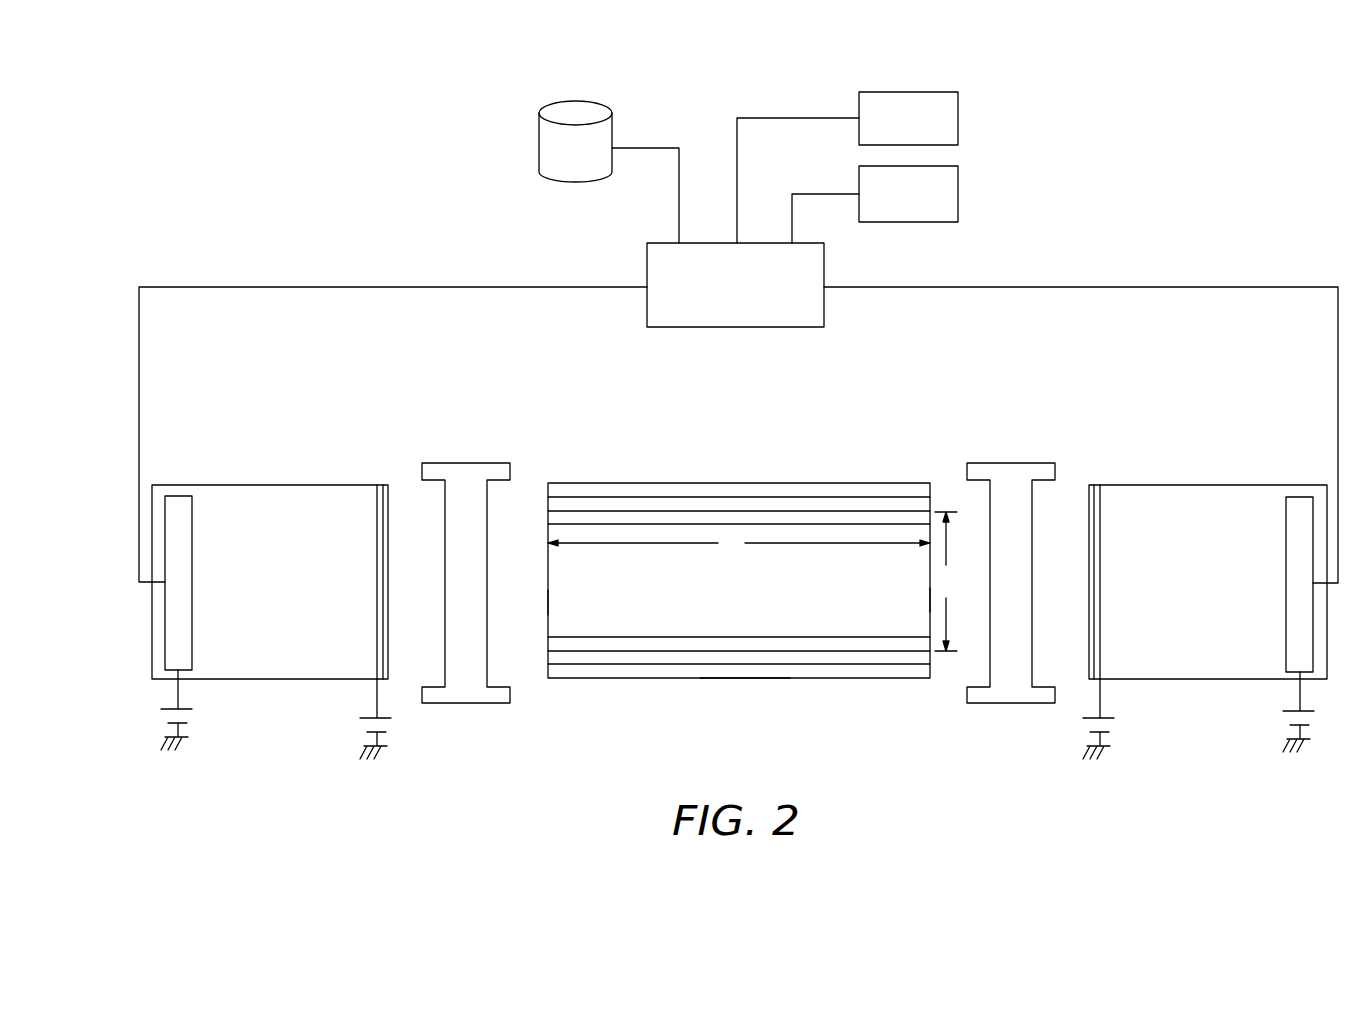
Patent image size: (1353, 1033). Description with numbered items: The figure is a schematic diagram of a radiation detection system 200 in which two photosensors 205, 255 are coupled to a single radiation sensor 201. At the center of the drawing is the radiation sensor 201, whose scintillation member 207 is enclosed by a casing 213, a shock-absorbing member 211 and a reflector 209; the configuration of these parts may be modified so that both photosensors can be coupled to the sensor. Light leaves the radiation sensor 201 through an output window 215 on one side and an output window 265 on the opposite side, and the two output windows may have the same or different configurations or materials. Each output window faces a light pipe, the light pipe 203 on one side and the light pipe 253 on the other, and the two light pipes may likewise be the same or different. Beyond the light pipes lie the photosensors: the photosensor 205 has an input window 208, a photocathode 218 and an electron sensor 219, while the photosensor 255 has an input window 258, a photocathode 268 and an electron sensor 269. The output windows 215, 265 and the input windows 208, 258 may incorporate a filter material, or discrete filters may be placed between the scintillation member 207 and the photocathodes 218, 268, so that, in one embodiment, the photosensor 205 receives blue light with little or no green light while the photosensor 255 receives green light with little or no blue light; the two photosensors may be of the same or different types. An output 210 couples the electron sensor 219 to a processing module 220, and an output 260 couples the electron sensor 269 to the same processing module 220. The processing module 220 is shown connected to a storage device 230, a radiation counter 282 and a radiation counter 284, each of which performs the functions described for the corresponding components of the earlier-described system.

The radiation detection system 200 is at (1154, 120).
The radiation sensor 201 is at (742, 685).
The light pipe 203 is at (458, 703).
The photosensor 205 is at (297, 594).
The scintillation member 207 is at (752, 594).
The input window 208 is at (383, 668).
The reflector 209 is at (777, 518).
The output 210 is at (345, 287).
The shock-absorbing member 211 is at (683, 505).
The casing 213 is at (600, 483).
The output window 215 is at (552, 603).
The photocathode 218 is at (377, 565).
The electron sensor 219 is at (192, 538).
The processing module 220 is at (755, 297).
The storage device 230 is at (613, 130).
The light pipe 253 is at (1018, 703).
The photosensor 255 is at (1221, 594).
The input window 258 is at (1094, 590).
The output 260 is at (1035, 287).
The output window 265 is at (926, 600).
The photocathode 268 is at (1100, 565).
The electron sensor 269 is at (1286, 538).
The radiation counter 282 is at (928, 131).
The radiation counter 284 is at (928, 205).